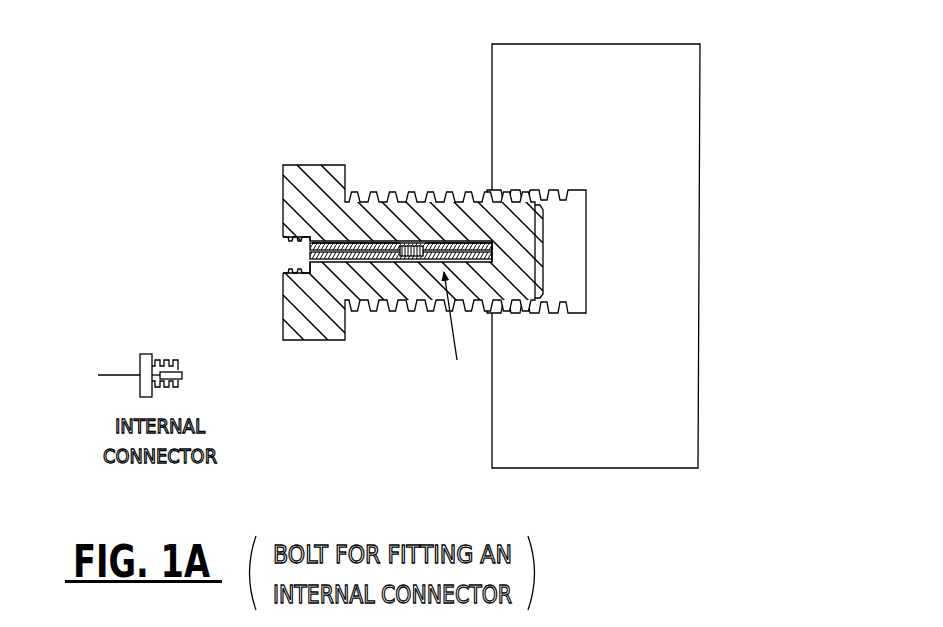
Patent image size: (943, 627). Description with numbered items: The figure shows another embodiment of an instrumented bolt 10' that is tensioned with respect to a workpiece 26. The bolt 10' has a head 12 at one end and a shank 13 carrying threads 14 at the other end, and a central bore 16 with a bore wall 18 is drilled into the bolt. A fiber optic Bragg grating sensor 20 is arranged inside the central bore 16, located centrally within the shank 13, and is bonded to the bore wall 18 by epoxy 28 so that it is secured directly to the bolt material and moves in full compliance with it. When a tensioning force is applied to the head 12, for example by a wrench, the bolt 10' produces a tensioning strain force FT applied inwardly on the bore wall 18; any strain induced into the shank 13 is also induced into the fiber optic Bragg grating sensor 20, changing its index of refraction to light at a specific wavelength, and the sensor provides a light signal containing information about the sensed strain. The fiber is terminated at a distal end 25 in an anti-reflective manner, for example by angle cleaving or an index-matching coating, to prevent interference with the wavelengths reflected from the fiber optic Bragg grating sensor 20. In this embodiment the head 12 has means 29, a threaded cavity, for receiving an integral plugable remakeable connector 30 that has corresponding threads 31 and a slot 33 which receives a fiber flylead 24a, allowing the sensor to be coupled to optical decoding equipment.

The bolt 10' is at (128, 61).
The head 12 is at (318, 185).
The shank 13 is at (385, 260).
The threads 14 is at (504, 315).
The central bore 16 is at (500, 272).
The bore wall 18 is at (495, 251).
The fiber optic Bragg grating sensor 20 is at (435, 192).
The fiber flylead 24a is at (290, 245).
The distal end 25 is at (478, 242).
The workpiece 26 is at (658, 77).
The epoxy 28 is at (383, 247).
The means for receiving an integral plugable remakeable connector 29 is at (290, 253).
The fiber optic interconnect 30 is at (140, 368).
The threads 31 is at (178, 362).
The slot 33 is at (186, 377).
The tensioning strain force FT is at (458, 335).